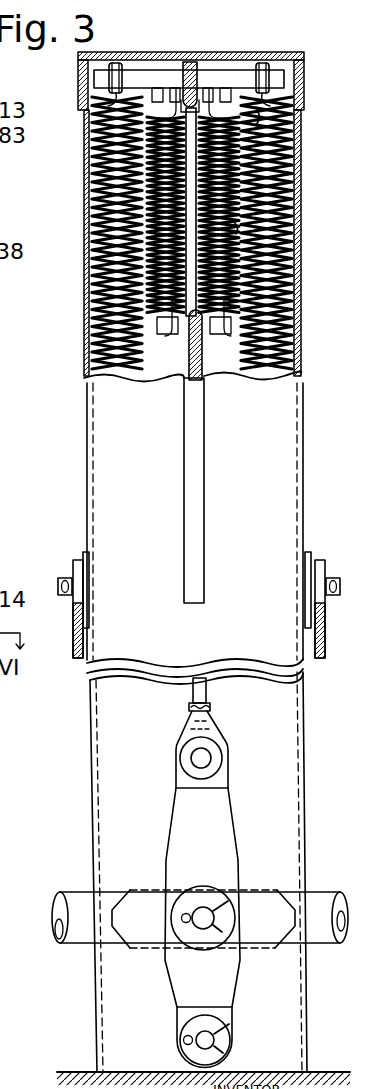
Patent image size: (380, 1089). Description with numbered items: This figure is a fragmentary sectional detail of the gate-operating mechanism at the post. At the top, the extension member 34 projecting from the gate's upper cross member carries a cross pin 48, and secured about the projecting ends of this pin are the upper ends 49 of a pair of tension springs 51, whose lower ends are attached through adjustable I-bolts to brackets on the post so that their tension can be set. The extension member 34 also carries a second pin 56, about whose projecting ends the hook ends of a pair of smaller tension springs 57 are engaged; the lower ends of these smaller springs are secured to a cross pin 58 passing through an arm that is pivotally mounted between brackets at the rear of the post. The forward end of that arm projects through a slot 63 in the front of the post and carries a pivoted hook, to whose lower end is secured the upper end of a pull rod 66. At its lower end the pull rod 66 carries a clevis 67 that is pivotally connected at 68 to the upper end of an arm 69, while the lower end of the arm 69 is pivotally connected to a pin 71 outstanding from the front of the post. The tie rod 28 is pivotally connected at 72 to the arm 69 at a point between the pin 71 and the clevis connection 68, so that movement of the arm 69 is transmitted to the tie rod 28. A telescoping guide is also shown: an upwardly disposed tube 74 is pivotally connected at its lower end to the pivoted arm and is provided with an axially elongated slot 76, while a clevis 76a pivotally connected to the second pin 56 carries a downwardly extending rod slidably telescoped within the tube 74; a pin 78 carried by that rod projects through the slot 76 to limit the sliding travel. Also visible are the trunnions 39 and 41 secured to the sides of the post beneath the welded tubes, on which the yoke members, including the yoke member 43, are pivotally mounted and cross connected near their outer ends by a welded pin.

The tie rod 28 is at (73, 893).
The extension member 34 is at (190, 62).
The trunnion 39 is at (333, 578).
The trunnion 41 is at (62, 578).
The yoke member 43 is at (77, 629).
The cross pin 48 is at (228, 78).
The upper ends of tension springs 49 is at (118, 70).
The tension springs 51 is at (100, 185).
The second pin 56 is at (207, 92).
The smaller tension springs 57 is at (122, 263).
The cross pin 58 is at (178, 338).
The slot 63 is at (206, 583).
The pull rod 66 is at (209, 691).
The clevis 67 is at (192, 732).
The pivotal connection 68 is at (192, 760).
The arm 69 is at (185, 808).
The pin 71 is at (205, 1040).
The pivotal connection 72 is at (203, 918).
The tube 74 is at (232, 177).
The axially elongated slot 76 is at (236, 227).
The clevis 76a is at (257, 112).
The pin 78 is at (206, 333).